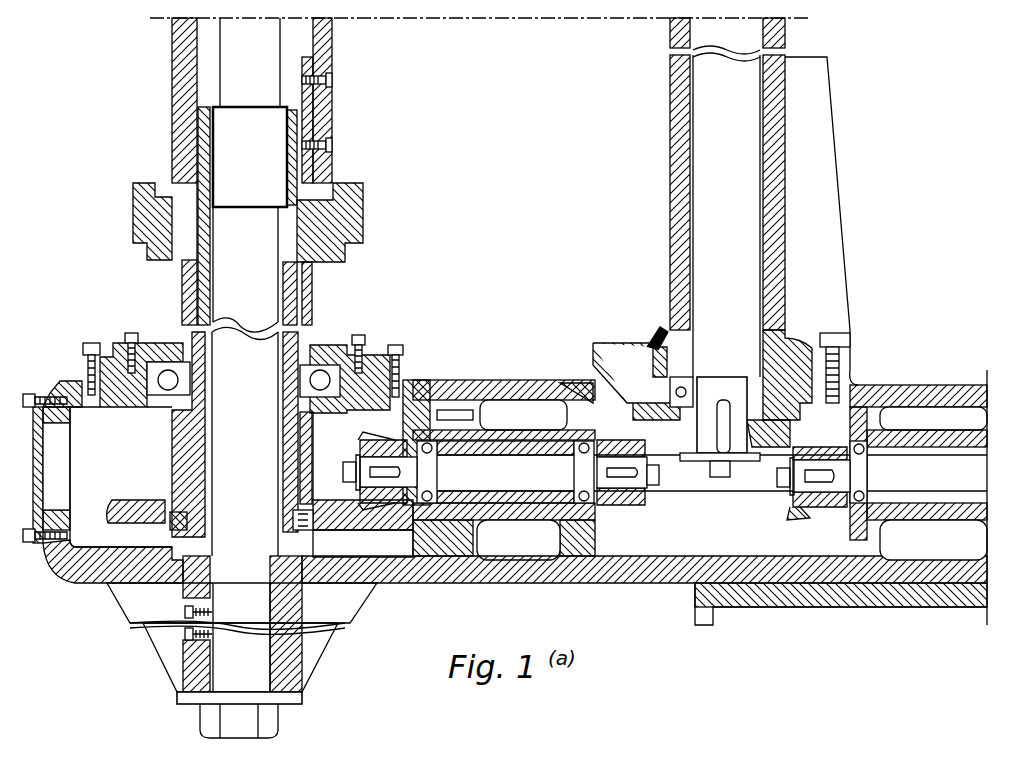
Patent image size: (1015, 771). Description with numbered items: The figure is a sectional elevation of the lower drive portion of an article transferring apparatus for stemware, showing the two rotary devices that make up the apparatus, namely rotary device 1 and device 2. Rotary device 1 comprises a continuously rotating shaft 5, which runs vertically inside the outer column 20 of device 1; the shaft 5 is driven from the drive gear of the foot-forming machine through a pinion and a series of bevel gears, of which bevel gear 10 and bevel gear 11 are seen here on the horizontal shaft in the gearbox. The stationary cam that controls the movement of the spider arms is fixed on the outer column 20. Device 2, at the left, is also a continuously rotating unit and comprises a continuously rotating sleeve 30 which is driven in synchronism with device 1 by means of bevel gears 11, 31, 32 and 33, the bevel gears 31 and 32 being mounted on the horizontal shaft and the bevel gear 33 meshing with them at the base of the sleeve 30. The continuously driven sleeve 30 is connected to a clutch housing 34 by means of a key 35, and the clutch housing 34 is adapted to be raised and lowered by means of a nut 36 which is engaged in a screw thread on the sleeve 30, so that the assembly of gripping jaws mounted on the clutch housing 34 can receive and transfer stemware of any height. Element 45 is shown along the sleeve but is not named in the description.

The rotary device 1 is at (858, 120).
The device 2 is at (118, 154).
The continuously rotating shaft 5 is at (745, 166).
The bevel gear 10 is at (795, 515).
The bevel gear 11 is at (668, 440).
The outer column 20 is at (778, 216).
The continuously rotating sleeve 30 is at (200, 440).
The bevel gear 31 is at (633, 505).
The bevel gear 32 is at (388, 424).
The bevel gear 33 is at (124, 498).
The clutch housing 34 is at (176, 115).
The key 35 is at (330, 116).
The nut 36 is at (140, 218).
The vertical shaft 45 is at (236, 282).